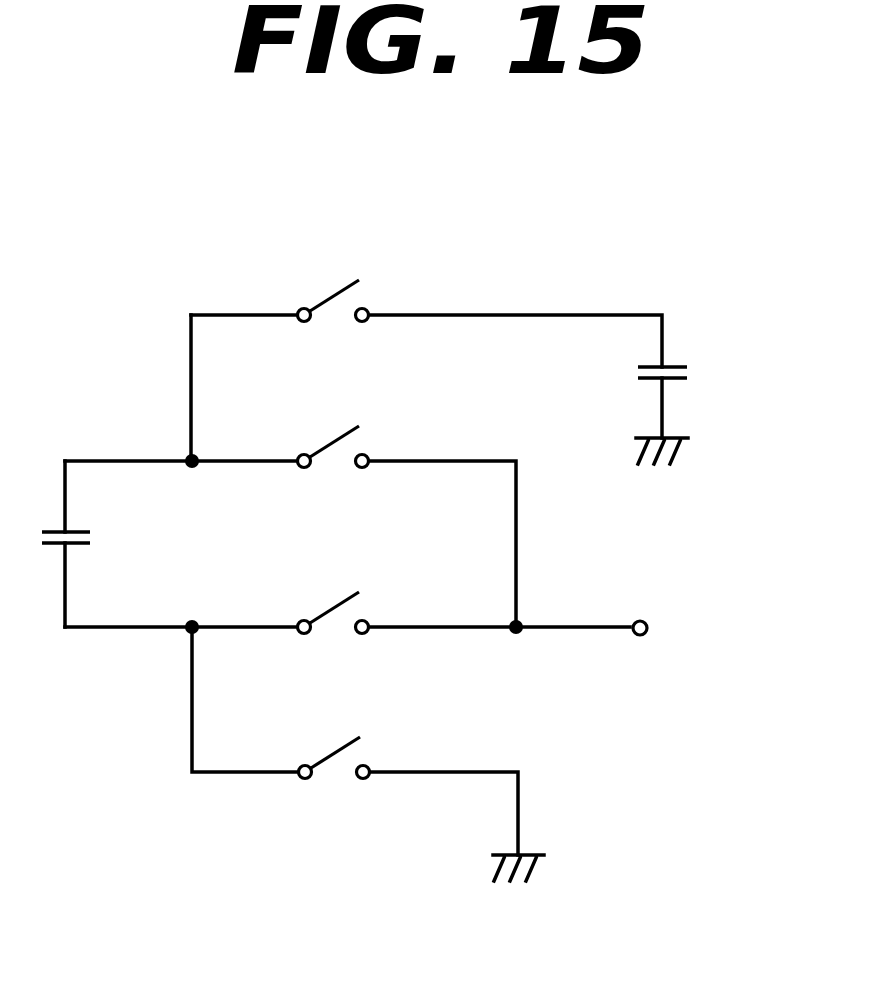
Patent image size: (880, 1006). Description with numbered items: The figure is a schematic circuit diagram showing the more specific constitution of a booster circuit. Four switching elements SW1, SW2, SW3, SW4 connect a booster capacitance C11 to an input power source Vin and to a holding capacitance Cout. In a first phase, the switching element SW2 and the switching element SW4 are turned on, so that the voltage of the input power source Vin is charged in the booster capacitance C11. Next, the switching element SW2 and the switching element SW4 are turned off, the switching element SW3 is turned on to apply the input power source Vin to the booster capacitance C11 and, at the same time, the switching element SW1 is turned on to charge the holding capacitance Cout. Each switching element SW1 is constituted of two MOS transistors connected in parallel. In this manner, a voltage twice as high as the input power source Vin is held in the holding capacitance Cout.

The switching element SW1 is at (342, 269).
The switching element SW2 is at (340, 416).
The switching element SW3 is at (341, 582).
The switching element SW4 is at (345, 730).
The booster capacitance C11 is at (114, 538).
The holding capacitance Cout is at (725, 399).
The input power source Vin is at (685, 620).